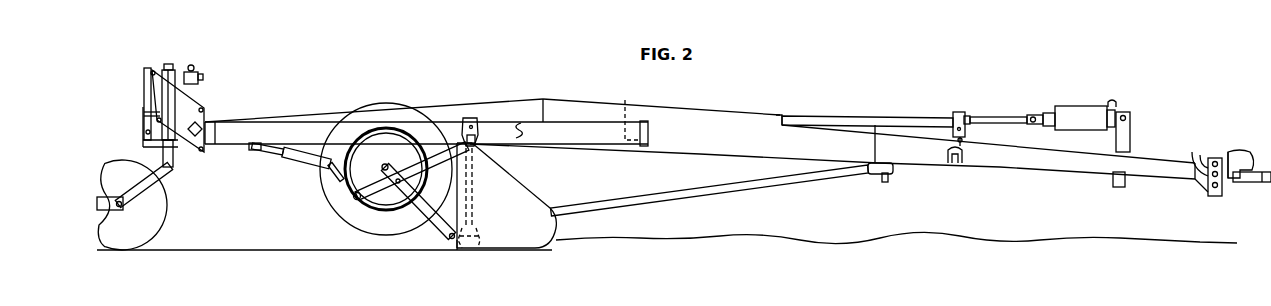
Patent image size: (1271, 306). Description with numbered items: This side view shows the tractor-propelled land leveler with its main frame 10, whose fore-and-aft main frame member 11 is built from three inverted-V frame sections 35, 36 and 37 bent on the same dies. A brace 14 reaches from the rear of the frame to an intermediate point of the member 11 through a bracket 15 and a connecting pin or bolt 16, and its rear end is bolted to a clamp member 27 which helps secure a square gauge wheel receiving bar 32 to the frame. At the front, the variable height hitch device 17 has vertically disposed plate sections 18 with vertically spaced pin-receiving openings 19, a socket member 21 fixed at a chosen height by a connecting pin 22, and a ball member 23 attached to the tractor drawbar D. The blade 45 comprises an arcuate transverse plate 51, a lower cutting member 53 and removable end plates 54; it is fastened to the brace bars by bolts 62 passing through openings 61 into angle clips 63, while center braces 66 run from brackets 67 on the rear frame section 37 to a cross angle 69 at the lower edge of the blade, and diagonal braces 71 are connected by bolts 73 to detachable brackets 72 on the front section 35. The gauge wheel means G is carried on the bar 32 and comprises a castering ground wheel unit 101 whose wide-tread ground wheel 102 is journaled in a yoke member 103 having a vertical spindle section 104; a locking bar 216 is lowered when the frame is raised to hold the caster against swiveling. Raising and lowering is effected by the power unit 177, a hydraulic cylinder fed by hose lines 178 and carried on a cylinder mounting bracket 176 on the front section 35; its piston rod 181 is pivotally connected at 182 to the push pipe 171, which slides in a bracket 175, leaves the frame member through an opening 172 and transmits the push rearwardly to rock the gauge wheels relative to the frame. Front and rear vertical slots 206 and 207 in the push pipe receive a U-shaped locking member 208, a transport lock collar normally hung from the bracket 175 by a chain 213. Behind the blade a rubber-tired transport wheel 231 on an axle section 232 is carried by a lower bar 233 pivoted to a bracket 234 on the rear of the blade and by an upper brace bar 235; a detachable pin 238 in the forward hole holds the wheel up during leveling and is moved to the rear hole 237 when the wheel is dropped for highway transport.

The main frame 10 is at (846, 95).
The main frame member 11 is at (683, 112).
The brace 14 is at (304, 121).
The bracket 15 is at (625, 112).
The connecting pin or bolt 16 is at (641, 121).
The variable height hitch device 17 is at (1231, 152).
The plate section 18 is at (1212, 196).
The pin-receiving opening 19 is at (1199, 165).
The socket member 21 is at (1242, 156).
The connecting pin 22 is at (1214, 161).
The ball member 23 is at (1240, 183).
The tractor drawbar D is at (1260, 183).
The clamp member 27 is at (224, 126).
The gauge wheel receiving bar 32 is at (203, 118).
The front frame section 35 is at (1025, 167).
The frame section 36 is at (697, 150).
The rear frame section 37 is at (440, 106).
The blade 45 is at (524, 251).
The arcuate transverse plate 51 is at (470, 190).
The lower cutting member 53 is at (496, 250).
The end plate 54 is at (483, 163).
The opening 61 is at (521, 123).
The bolt 62 is at (476, 128).
The angle clip 63 is at (466, 117).
The center brace 66 is at (302, 161).
The bracket 67 is at (256, 151).
The cross angle 69 is at (460, 251).
The diagonal brace 71 is at (684, 190).
The detachable bracket 72 is at (893, 168).
The bolt 73 is at (885, 182).
The gauge wheel means G is at (115, 141).
The castering ground wheel unit 101 is at (187, 70).
The ground wheel 102 is at (154, 214).
The yoke member 103 is at (169, 180).
The vertical spindle section 104 is at (167, 64).
The push pipe 171 is at (887, 117).
The opening 172 is at (783, 118).
The bracket 175 is at (955, 112).
The cylinder mounting bracket 176 is at (1128, 134).
The power unit 177 is at (1081, 105).
The hose line 178 is at (1111, 104).
The piston rod 181 is at (1045, 113).
The pivotal connection 182 is at (1030, 115).
The front vertical slot 206 is at (997, 117).
The rear vertical slot 207 is at (967, 116).
The locking member 208 is at (950, 163).
The chain 213 is at (963, 142).
The locking bar 216 is at (153, 64).
The rubber-tired wheel 231 is at (366, 110).
The axle section 232 is at (382, 165).
The bar 233 is at (432, 219).
The bracket 234 is at (472, 218).
The brace bar 235 is at (355, 200).
The rear hole 237 is at (354, 198).
The detachable pin 238 is at (397, 185).